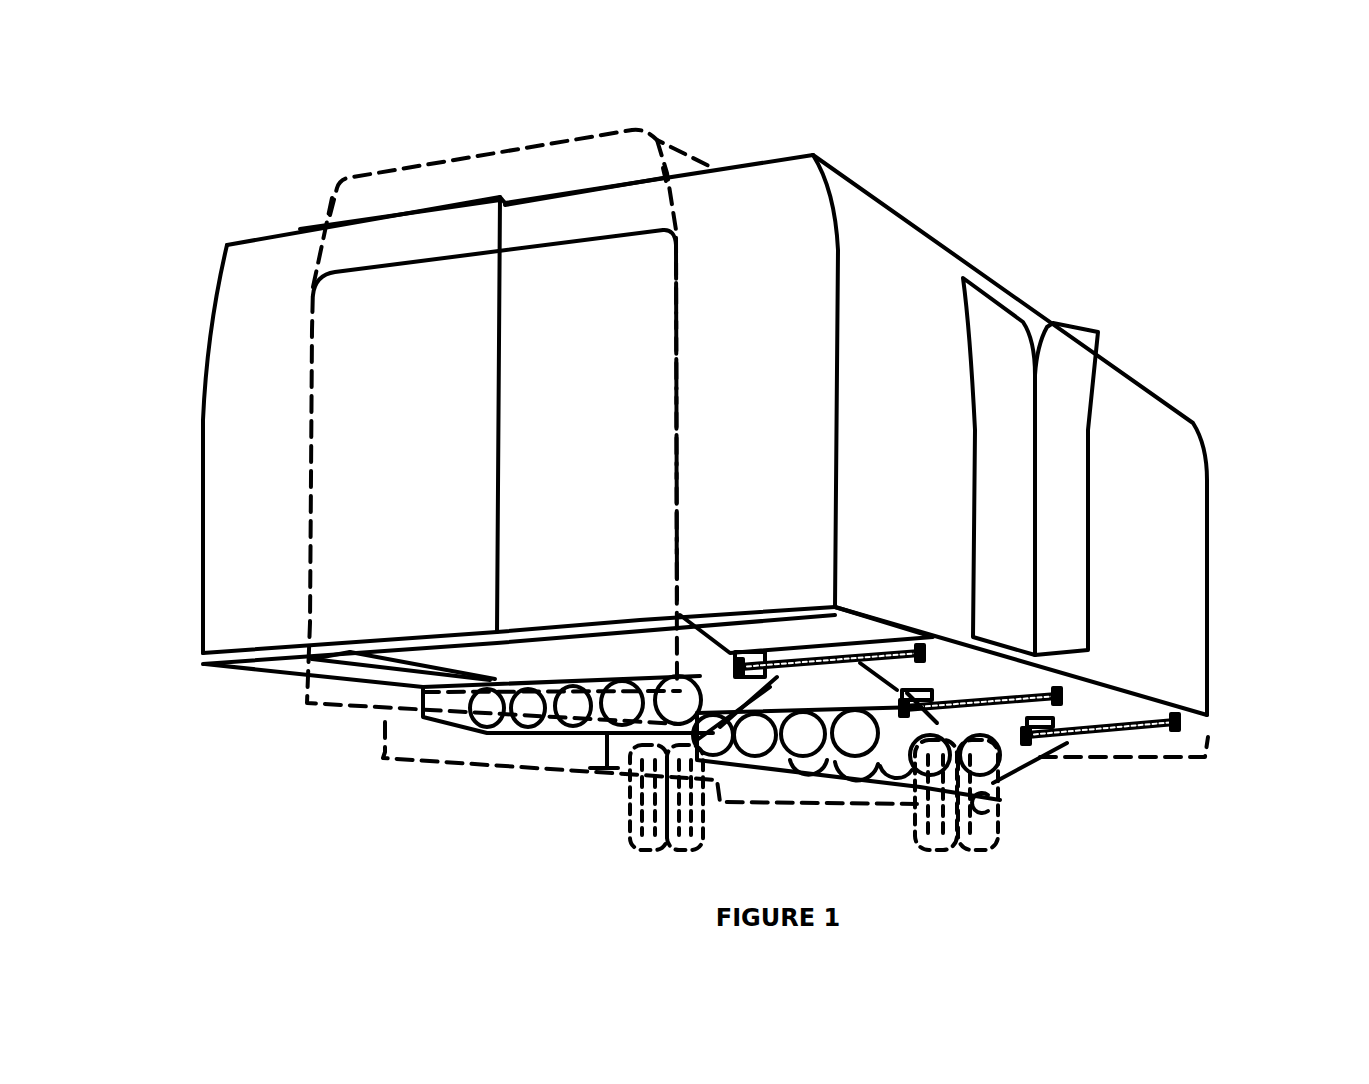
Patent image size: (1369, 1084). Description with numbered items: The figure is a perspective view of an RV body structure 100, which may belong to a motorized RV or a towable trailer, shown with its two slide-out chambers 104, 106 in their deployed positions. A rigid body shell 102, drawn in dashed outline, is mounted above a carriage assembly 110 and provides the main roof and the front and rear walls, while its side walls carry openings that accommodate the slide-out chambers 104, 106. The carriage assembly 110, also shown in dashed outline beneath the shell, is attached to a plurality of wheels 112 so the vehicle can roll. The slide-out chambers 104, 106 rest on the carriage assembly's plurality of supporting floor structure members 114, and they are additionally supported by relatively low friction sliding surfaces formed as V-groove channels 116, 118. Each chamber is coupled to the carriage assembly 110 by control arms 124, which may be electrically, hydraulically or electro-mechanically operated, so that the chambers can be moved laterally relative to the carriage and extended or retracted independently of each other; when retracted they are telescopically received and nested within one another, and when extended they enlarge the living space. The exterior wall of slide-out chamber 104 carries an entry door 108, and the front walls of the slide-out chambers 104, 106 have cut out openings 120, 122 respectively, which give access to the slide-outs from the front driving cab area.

The body structure 100 is at (725, 143).
The rigid body shell 102 is at (325, 215).
The slide-out chamber 104 is at (1175, 538).
The slide-out chamber 106 is at (220, 422).
The entry door 108 is at (1062, 545).
The carriage assembly 110 is at (407, 753).
The wheels 112 is at (693, 826).
The supporting floor structure members 114 is at (593, 733).
The V-groove channel 116 is at (722, 632).
The V-groove channel 118 is at (337, 652).
The cut out opening 120 is at (627, 372).
The cut out opening 122 is at (365, 386).
The control arms 124 is at (1007, 740).